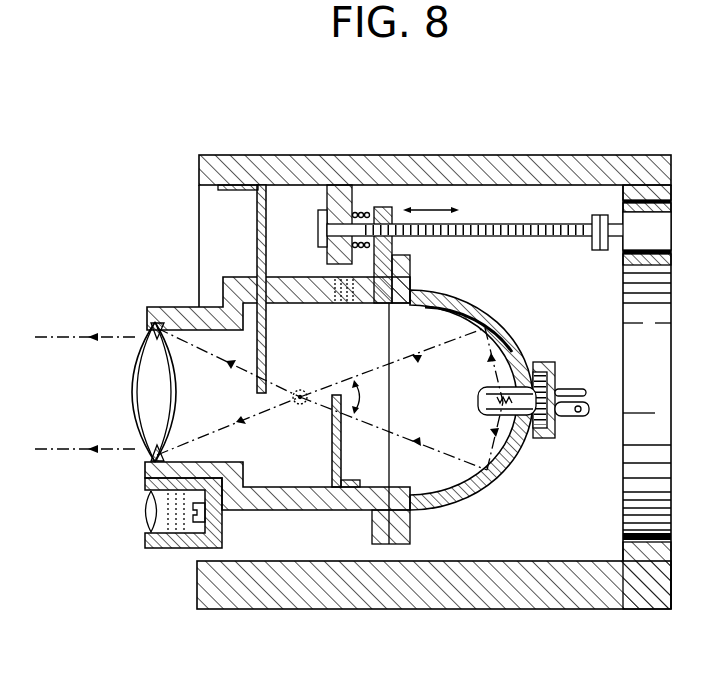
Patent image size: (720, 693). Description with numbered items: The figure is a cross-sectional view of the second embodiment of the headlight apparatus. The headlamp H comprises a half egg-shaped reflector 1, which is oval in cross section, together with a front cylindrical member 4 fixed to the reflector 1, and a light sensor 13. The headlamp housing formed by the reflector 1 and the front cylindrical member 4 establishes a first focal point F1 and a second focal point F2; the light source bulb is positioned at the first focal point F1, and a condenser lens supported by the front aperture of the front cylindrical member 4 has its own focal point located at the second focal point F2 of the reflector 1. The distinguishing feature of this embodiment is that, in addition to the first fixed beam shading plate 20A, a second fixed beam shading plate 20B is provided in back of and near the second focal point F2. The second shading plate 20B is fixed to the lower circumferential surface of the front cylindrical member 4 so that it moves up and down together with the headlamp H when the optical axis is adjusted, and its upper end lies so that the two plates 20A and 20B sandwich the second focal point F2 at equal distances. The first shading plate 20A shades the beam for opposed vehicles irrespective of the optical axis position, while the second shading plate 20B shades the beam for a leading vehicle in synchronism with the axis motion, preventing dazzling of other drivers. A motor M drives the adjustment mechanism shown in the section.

The first fixed beam shading plate 20A is at (258, 214).
The second fixed beam shading plate 20B is at (352, 450).
The front cylindrical member 4 is at (175, 310).
The headlamp H is at (479, 300).
The reflector 1 is at (513, 341).
The motor M is at (647, 231).
The first focal point F1 is at (508, 416).
The second focal point F2 is at (300, 390).
The light sensor 13 is at (150, 557).